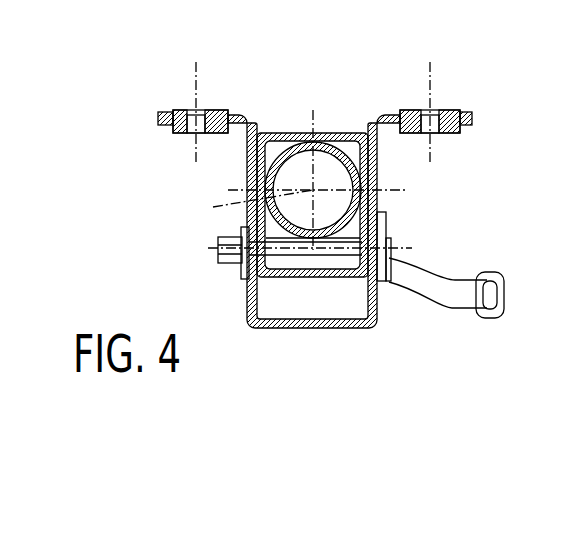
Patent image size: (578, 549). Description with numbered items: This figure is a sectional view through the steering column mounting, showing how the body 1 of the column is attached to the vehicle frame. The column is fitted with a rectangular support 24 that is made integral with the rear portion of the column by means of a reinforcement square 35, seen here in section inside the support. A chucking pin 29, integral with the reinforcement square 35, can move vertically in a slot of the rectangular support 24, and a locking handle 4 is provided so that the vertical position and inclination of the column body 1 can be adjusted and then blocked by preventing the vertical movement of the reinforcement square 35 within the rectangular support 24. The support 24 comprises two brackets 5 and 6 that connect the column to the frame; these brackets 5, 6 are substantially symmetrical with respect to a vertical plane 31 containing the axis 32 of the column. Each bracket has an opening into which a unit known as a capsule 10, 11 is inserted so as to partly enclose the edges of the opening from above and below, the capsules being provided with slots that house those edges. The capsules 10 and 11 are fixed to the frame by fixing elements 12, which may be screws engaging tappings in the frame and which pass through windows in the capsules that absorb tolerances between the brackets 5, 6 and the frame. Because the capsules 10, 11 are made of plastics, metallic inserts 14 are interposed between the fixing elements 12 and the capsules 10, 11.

The body 1 is at (362, 146).
The locking handle 4 is at (489, 272).
The bracket 5 is at (250, 114).
The bracket 6 is at (378, 114).
The capsule 10 is at (174, 110).
The capsule 11 is at (452, 112).
The fixing element 12 is at (306, 98).
The metallic insert 14 is at (173, 134).
The rectangular support 24 is at (375, 318).
The chucking pin 29 is at (289, 250).
The vertical plane 31 is at (311, 150).
The axis 32 is at (230, 208).
The reinforcement square 35 is at (286, 135).